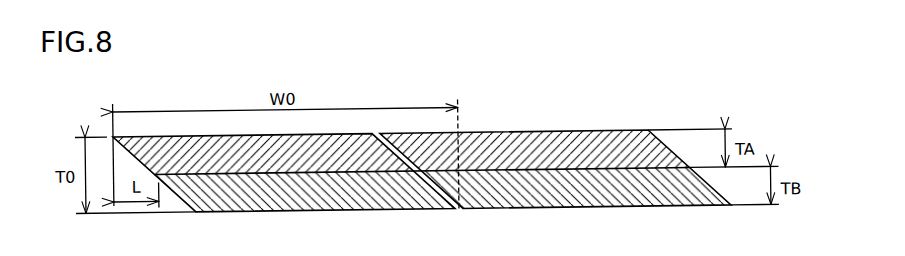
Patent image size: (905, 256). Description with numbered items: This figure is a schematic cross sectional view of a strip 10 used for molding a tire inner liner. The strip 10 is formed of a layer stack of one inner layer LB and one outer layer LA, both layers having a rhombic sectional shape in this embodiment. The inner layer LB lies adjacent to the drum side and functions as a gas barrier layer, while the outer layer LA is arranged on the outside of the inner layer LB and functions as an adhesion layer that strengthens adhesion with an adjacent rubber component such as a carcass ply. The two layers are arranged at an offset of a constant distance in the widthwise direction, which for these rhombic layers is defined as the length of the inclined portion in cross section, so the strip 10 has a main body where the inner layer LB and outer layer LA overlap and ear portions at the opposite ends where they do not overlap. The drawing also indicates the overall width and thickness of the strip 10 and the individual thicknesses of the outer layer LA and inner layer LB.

The strip 10 is at (421, 136).
The outer layer LA is at (401, 152).
The inner layer LB is at (442, 190).